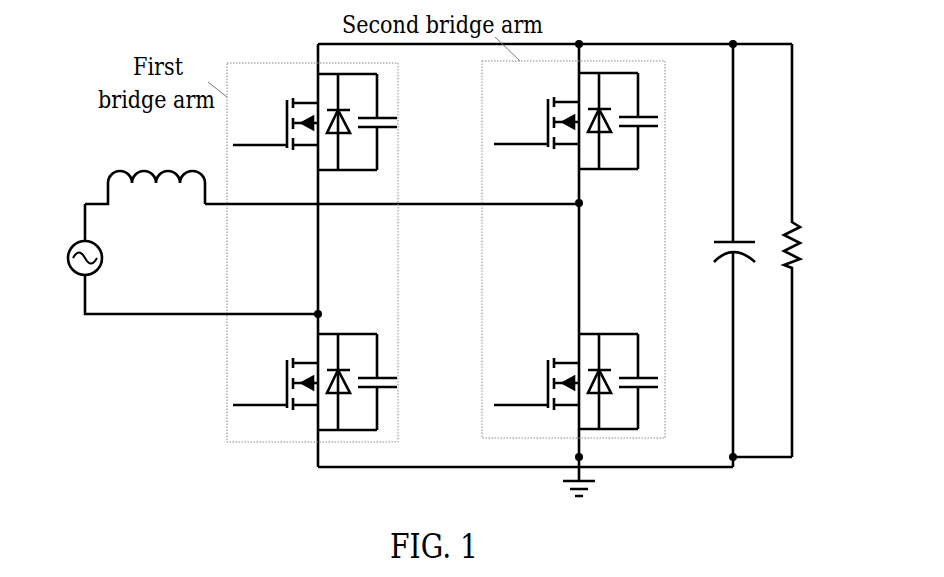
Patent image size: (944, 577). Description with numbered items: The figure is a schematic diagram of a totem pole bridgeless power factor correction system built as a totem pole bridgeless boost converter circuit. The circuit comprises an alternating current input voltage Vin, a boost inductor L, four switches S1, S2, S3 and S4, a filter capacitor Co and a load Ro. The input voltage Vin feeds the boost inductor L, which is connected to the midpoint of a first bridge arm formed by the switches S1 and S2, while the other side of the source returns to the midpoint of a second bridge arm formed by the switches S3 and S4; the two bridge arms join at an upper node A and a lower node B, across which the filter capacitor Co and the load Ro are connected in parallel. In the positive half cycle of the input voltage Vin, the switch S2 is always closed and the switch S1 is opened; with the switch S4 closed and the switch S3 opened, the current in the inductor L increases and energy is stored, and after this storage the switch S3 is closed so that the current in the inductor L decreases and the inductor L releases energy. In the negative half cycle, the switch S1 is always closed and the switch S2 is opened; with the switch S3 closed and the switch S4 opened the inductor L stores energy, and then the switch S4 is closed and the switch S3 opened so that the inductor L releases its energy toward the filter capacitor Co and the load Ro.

The switch S1 is at (315, 122).
The switch S2 is at (315, 382).
The switch S3 is at (576, 121).
The switch S4 is at (576, 381).
The boost inductor L is at (145, 172).
The alternating current input voltage Vin is at (175, 257).
The filter capacitor Co is at (740, 255).
The load Ro is at (809, 250).
The node A is at (597, 30).
The node B is at (593, 481).